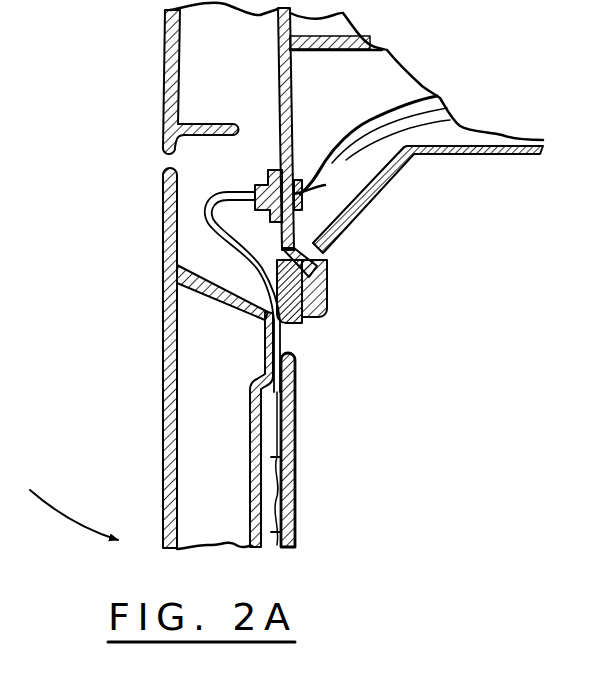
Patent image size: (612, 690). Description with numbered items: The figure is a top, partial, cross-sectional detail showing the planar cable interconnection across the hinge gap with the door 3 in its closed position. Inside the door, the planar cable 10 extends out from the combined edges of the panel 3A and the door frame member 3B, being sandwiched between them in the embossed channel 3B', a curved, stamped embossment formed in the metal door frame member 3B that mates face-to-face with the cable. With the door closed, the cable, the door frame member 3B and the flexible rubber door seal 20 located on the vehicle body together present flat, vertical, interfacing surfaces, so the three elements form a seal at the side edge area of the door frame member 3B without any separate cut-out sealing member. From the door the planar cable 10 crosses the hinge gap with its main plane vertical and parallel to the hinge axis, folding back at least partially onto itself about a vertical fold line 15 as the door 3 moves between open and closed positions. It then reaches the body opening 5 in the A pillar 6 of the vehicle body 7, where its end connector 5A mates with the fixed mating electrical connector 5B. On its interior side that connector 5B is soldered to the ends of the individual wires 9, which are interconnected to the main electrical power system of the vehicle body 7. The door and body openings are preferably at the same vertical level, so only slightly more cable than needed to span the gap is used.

The door 3 is at (160, 426).
The panel 3A is at (297, 441).
The door frame member 3B is at (222, 298).
The embossed channel 3B' is at (231, 429).
The body opening 5 is at (293, 181).
The end connector 5A is at (258, 178).
The fixed mating electrical connector 5B is at (303, 197).
The A pillar 6 is at (279, 105).
The vehicle body 7 is at (451, 187).
The individual wires 9 is at (390, 96).
The planar cable 10 is at (221, 256).
The vertical fold line 15 is at (226, 222).
The door seal 20 is at (298, 323).